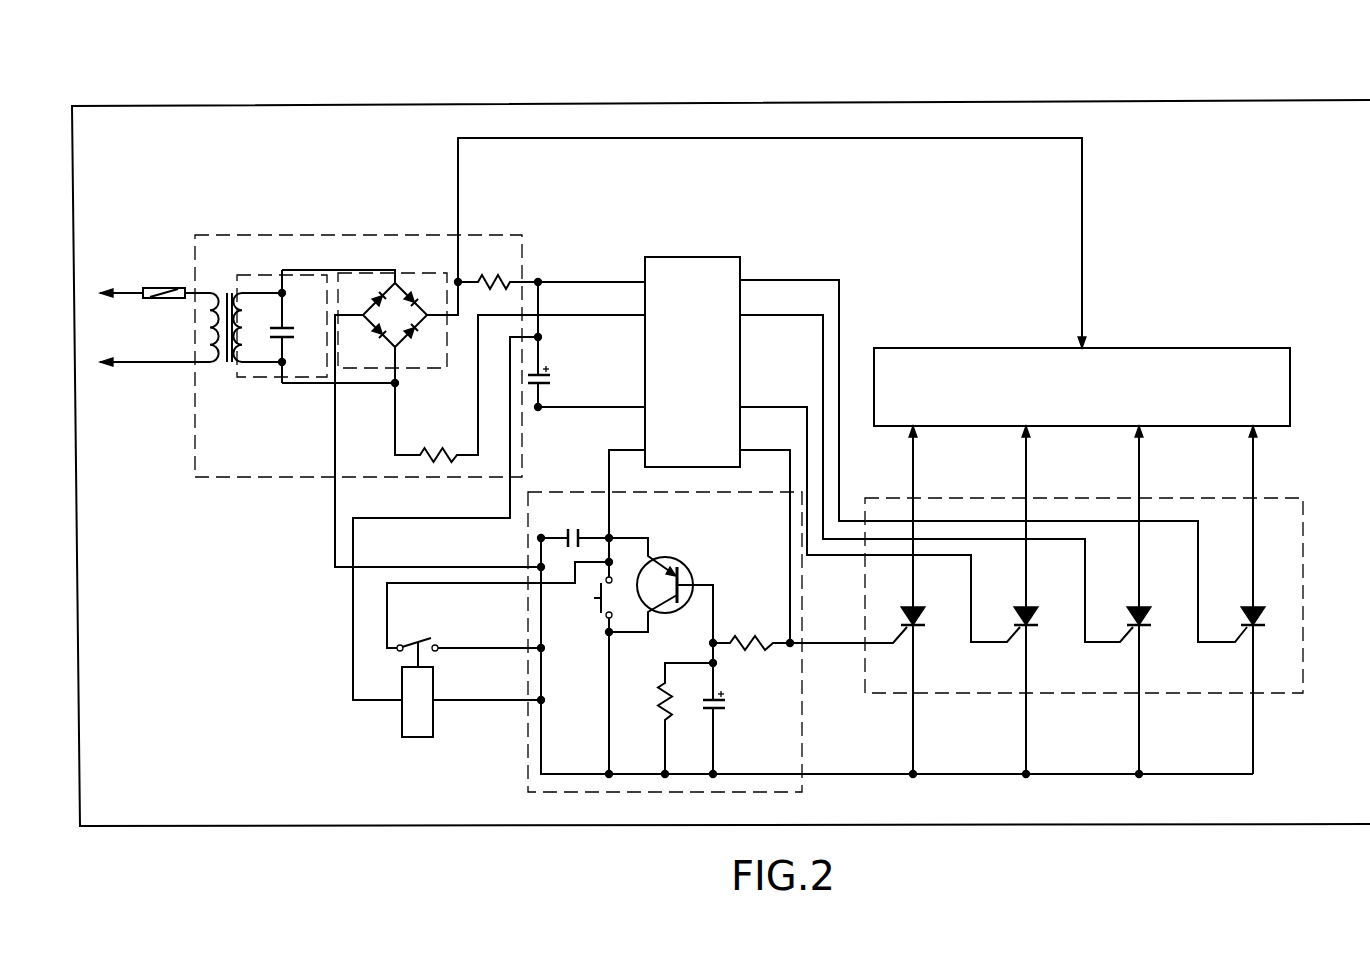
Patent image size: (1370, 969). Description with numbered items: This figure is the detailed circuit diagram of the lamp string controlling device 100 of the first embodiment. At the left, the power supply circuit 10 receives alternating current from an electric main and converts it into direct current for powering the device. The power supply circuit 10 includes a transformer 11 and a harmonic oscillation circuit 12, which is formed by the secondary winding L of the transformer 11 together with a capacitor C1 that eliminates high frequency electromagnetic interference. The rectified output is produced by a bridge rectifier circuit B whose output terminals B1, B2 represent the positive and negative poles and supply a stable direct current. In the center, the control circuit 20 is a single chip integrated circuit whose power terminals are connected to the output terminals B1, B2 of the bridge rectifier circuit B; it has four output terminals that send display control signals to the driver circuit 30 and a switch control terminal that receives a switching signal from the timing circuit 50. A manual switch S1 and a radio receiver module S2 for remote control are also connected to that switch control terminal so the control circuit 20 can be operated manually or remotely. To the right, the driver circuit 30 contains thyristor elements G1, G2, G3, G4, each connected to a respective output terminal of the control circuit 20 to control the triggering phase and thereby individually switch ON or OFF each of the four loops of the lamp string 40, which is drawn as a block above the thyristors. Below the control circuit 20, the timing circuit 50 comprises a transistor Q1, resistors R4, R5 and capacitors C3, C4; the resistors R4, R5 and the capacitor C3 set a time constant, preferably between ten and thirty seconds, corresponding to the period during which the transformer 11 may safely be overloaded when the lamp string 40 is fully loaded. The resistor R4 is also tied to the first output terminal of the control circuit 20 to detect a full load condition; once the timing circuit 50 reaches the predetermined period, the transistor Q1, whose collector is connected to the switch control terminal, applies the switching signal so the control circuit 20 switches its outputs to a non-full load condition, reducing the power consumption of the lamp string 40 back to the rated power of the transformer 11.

The lamp string controlling device 100 is at (1152, 100).
The power supply circuit 10 is at (193, 249).
The transformer 11 is at (226, 292).
The harmonic oscillation circuit 12 is at (245, 378).
The secondary winding L is at (257, 327).
The capacitor C1 is at (296, 326).
The bridge rectifier circuit B is at (405, 370).
The output terminal B1 is at (427, 299).
The output terminal B2 is at (368, 343).
The control circuit 20 is at (697, 257).
The lamp string 40 is at (1082, 387).
The driver circuit 30 is at (1303, 533).
The timing circuit 50 is at (803, 709).
The capacitor C4 is at (577, 526).
The transistor Q1 is at (663, 590).
The manual switch S1 is at (500, 604).
The radio receiver module S2 is at (430, 720).
The resistor R4 is at (750, 631).
The resistor R5 is at (672, 717).
The capacitor C3 is at (728, 708).
The thyristor element G1 is at (928, 600).
The thyristor element G2 is at (1041, 600).
The thyristor element G3 is at (1154, 600).
The thyristor element G4 is at (1268, 600).